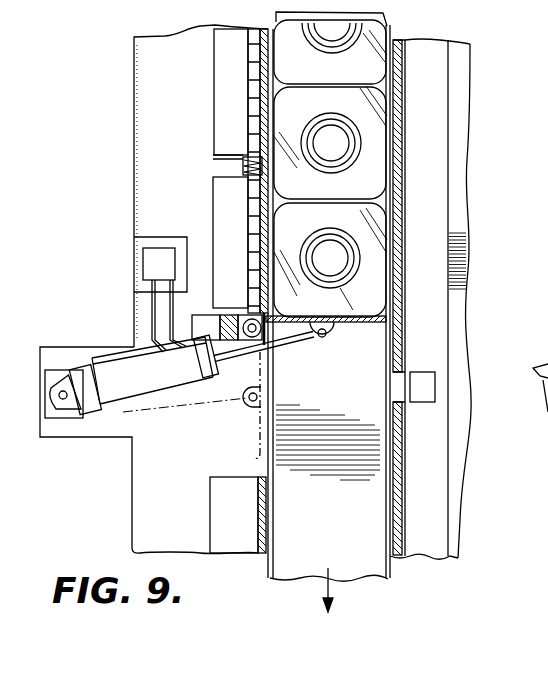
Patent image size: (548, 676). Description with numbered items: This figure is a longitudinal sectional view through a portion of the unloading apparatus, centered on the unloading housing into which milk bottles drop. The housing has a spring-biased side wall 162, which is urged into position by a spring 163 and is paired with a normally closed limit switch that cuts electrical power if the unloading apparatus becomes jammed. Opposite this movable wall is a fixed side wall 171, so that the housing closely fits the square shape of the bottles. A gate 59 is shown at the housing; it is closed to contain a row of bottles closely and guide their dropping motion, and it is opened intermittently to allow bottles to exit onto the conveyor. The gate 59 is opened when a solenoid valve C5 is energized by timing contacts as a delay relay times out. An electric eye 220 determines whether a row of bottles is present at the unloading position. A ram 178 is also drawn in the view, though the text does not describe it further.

The side wall 162 is at (266, 68).
The spring 163 is at (246, 167).
The solenoid valve C5 is at (157, 238).
The hydraulic cylinder 178 is at (124, 396).
The gate 59 is at (358, 323).
The fixed side wall 171 is at (398, 112).
The electric eye 220 is at (423, 370).